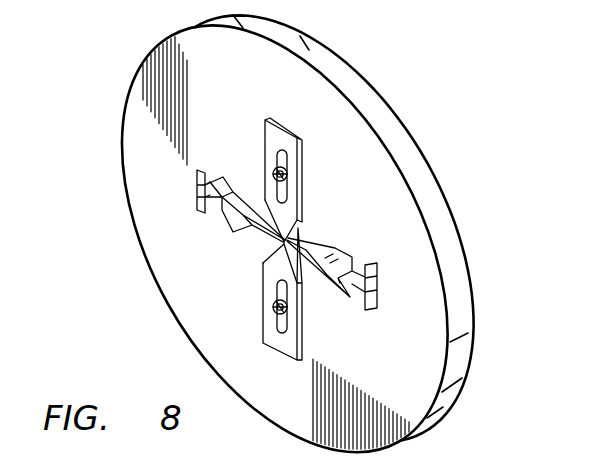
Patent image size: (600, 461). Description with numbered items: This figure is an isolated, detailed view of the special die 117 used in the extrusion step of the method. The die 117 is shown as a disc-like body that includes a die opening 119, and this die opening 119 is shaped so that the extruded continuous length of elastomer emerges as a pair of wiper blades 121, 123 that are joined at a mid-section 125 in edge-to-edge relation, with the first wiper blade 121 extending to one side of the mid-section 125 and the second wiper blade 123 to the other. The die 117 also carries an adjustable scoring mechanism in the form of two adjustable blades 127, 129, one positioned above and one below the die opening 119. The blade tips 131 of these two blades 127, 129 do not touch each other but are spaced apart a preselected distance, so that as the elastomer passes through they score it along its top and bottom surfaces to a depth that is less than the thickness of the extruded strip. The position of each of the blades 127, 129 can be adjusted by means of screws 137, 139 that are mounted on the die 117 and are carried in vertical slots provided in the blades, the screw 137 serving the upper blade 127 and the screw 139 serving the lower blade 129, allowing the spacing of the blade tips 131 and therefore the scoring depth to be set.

The die 117 is at (398, 129).
The die opening 119 is at (237, 196).
The wiper blade 121 is at (197, 195).
The wiper blade 123 is at (378, 300).
The mid-section 125 is at (317, 245).
The adjustable blade 127 is at (268, 135).
The adjustable blade 129 is at (292, 348).
The blade tips 131 is at (272, 250).
The screw 137 is at (288, 173).
The screw 139 is at (273, 307).